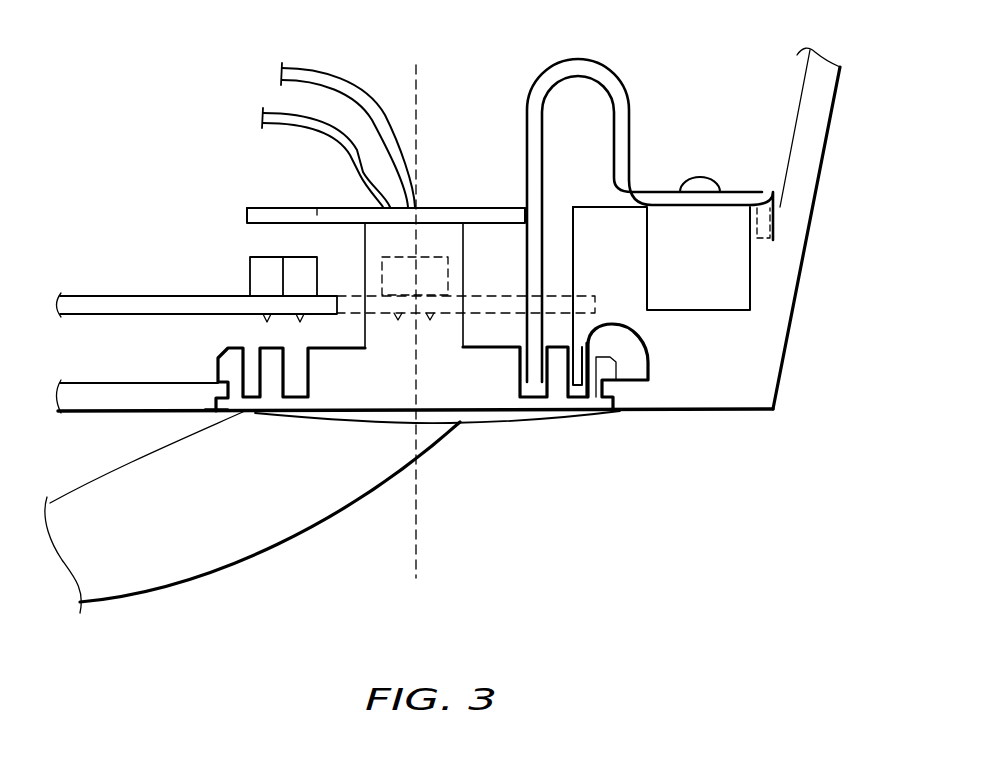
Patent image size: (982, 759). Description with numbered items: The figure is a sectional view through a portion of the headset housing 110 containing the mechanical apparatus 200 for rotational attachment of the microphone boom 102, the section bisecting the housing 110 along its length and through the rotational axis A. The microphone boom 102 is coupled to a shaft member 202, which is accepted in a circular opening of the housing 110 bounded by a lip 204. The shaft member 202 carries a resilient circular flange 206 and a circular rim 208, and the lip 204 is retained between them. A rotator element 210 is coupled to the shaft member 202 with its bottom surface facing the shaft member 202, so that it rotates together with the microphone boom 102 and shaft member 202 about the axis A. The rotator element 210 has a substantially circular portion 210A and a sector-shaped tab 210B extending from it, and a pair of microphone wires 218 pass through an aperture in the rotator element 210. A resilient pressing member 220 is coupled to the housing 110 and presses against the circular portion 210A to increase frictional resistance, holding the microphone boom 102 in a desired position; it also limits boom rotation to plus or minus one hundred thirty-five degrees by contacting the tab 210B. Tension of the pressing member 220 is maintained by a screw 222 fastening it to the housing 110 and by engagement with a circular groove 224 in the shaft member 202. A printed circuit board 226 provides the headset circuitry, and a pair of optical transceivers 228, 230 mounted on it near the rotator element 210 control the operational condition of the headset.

The microphone boom 102 is at (260, 572).
The headset housing 110 is at (788, 351).
The mechanical apparatus 200 is at (580, 520).
The shaft member 202 is at (520, 421).
The lip 204 is at (222, 385).
The resilient circular flange 206 is at (225, 348).
The circular rim 208 is at (213, 411).
The rotator element 210 is at (432, 150).
The circular portion 210A is at (432, 206).
The sector-shaped tab 210B is at (312, 207).
The microphone wires 218 is at (305, 68).
The resilient pressing member 220 is at (610, 68).
The screw 222 is at (705, 178).
The circular groove 224 is at (518, 392).
The printed circuit board 226 is at (165, 296).
The optical transceiver 228 is at (252, 262).
The optical transceiver 230 is at (449, 268).
The rotational axis A is at (416, 72).